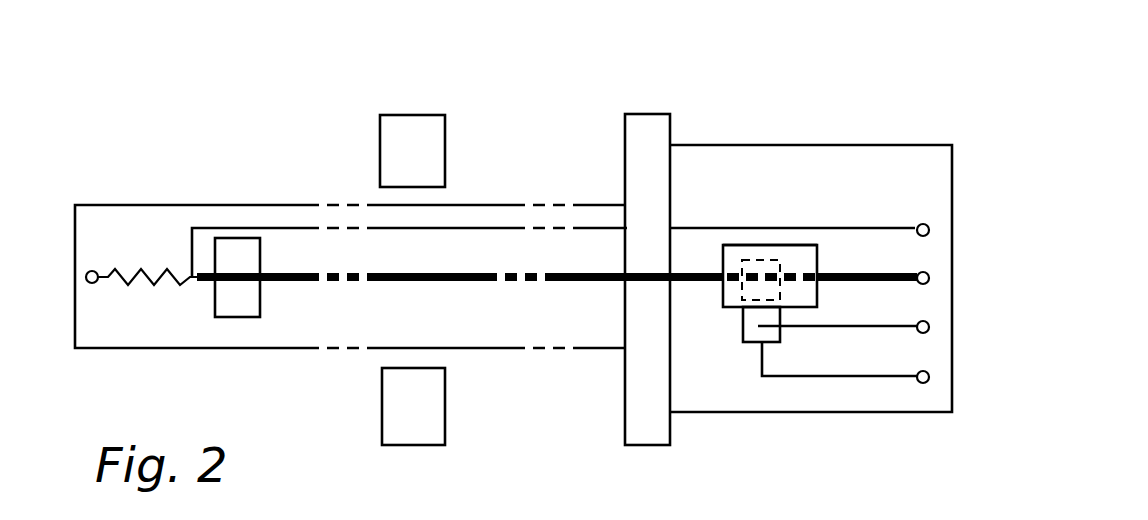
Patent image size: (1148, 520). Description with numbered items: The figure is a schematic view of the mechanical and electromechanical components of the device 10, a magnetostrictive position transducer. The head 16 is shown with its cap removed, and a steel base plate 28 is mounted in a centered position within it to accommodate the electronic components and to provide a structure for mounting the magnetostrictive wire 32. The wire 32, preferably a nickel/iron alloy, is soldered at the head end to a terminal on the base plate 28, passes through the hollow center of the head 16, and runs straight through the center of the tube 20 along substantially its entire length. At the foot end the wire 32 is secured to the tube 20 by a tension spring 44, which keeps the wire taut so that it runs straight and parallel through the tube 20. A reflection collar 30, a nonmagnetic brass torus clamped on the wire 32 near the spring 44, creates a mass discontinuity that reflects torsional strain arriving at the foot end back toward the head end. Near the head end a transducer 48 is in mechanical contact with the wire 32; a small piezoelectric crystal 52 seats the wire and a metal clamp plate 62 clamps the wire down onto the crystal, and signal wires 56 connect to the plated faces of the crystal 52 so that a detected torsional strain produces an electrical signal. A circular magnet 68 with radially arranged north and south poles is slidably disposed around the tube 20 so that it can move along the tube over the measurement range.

The device 10 is at (288, 165).
The head 16 is at (953, 96).
The tube 20 is at (204, 163).
The steel base plate 28 is at (832, 412).
The reflection collar 30 is at (234, 275).
The magnetostrictive wire 32 is at (412, 272).
The tension spring 44 is at (145, 286).
The transducer 48 is at (722, 247).
The piezoelectric crystal 52 is at (743, 332).
The signal wires 56 is at (918, 322).
The metal clamp plate 62 is at (817, 252).
The circular magnet 68 is at (388, 115).